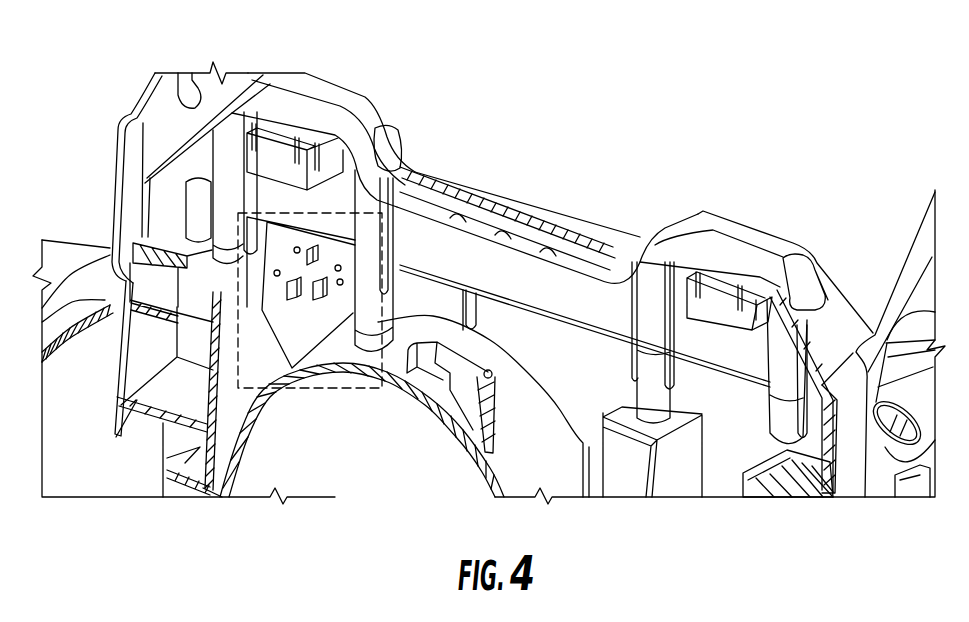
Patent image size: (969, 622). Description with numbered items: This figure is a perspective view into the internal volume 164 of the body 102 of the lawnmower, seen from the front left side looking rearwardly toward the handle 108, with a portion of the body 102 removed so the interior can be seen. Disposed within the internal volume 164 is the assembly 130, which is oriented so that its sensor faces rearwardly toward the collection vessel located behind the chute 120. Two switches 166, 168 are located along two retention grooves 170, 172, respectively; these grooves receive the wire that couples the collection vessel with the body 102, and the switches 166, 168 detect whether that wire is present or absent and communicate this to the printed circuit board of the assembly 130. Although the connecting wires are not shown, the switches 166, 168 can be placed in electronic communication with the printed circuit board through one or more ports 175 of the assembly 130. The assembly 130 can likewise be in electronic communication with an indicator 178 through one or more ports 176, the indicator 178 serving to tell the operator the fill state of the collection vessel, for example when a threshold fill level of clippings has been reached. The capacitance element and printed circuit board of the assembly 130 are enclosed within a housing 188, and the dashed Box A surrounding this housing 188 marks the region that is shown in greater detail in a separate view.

The body 102 is at (823, 477).
The handle 108 is at (913, 270).
The chute 120 is at (407, 465).
The assembly 130 is at (312, 245).
The internal volume 164 is at (718, 455).
The switch 166 is at (279, 155).
The switch 168 is at (720, 298).
The retention groove 170 is at (325, 115).
The retention groove 172 is at (747, 258).
The ports 175 is at (340, 282).
The ports 176 is at (293, 297).
The indicator 178 is at (510, 230).
The housing 188 is at (147, 232).
The Box A is at (360, 390).